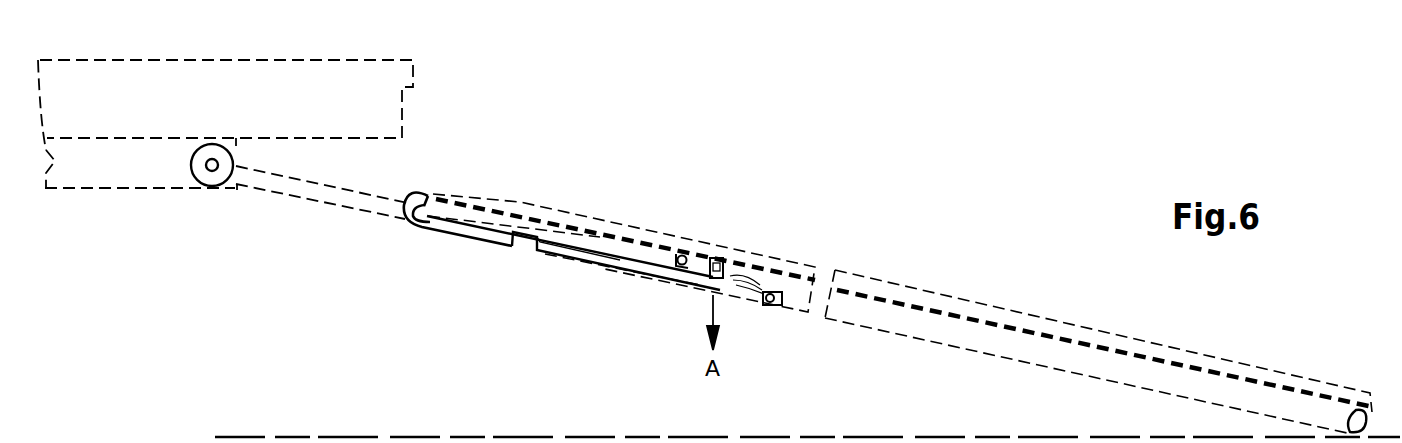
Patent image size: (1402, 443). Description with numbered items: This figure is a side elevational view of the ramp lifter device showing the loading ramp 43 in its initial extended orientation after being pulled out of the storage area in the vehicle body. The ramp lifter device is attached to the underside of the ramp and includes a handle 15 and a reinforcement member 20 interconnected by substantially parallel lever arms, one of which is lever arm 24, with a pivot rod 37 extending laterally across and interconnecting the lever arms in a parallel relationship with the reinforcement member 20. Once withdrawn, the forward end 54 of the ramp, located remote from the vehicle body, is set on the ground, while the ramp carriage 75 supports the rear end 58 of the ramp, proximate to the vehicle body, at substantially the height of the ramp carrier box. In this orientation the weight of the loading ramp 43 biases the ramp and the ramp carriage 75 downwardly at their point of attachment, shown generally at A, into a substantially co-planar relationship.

The handle 15 is at (453, 240).
The reinforcement member 20 is at (726, 258).
The lever arm 24 is at (585, 261).
The pivot rod 37 is at (688, 255).
The loading ramp 43 is at (1073, 323).
The forward end of the ramp 54 is at (1373, 407).
The rear end of the loading ramp 58 is at (477, 192).
The ramp carriage 75 is at (350, 234).